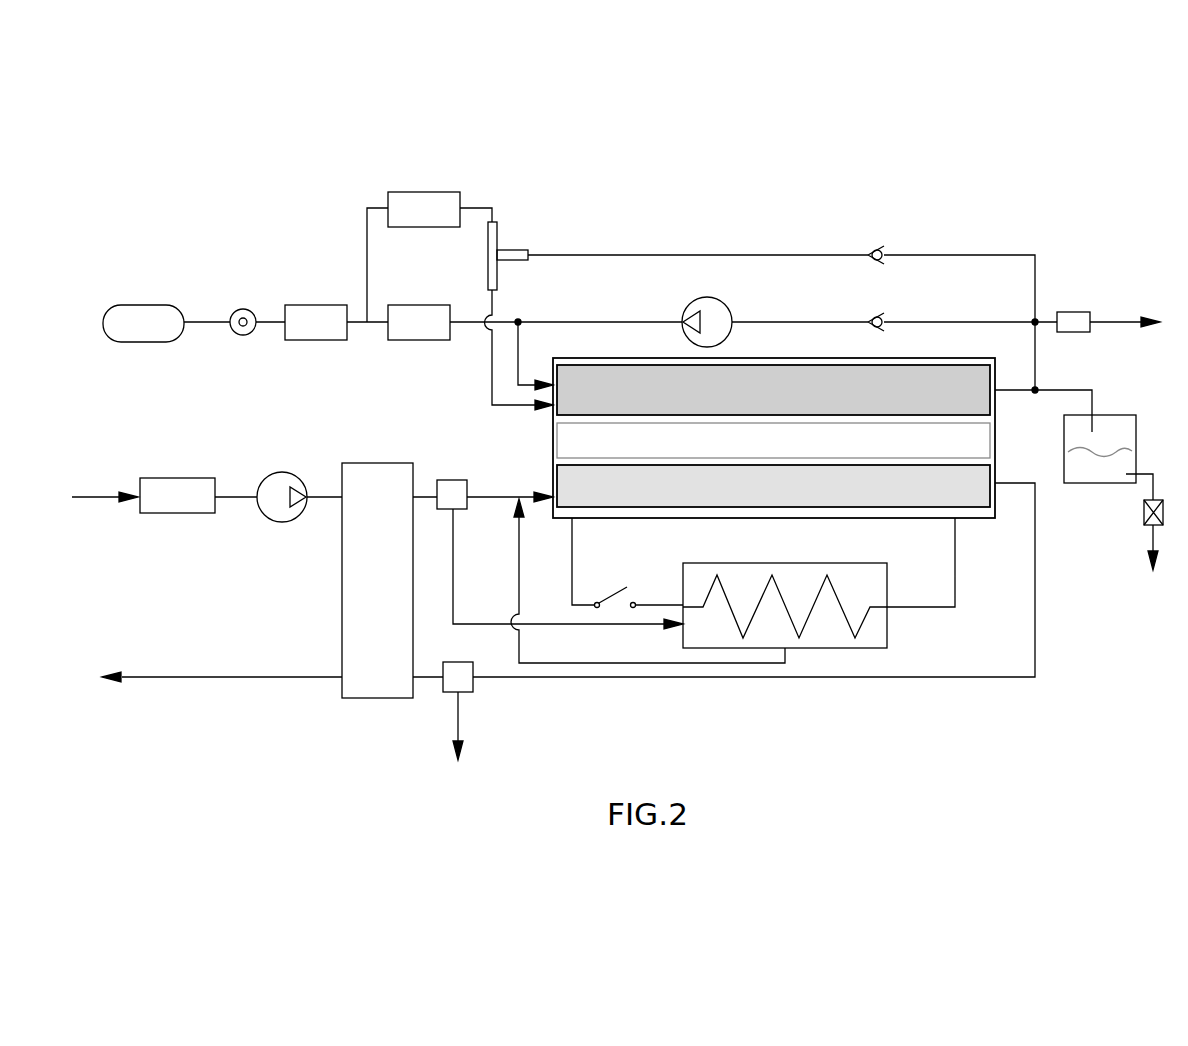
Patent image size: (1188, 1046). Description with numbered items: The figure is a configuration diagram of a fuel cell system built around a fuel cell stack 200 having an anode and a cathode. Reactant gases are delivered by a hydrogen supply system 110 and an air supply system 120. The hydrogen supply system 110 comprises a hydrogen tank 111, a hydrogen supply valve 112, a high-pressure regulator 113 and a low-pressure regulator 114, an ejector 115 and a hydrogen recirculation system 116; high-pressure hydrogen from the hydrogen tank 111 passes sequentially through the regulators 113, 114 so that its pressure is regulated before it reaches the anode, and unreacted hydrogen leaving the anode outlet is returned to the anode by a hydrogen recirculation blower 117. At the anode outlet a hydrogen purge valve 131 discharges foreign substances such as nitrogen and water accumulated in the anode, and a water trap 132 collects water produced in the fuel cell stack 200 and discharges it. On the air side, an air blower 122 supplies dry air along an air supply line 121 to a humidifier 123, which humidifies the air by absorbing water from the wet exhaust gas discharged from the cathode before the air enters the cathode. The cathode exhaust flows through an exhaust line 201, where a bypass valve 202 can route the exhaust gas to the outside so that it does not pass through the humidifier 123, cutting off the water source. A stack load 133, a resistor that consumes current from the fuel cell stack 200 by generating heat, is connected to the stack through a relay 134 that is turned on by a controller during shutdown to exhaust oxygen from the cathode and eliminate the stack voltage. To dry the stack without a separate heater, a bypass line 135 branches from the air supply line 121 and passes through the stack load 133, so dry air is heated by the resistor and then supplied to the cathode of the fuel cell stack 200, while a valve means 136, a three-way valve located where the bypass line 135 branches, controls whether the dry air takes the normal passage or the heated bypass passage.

The hydrogen supply system 110 is at (348, 284).
The hydrogen tank 111 is at (140, 306).
The hydrogen supply valve 112 is at (243, 338).
The high-pressure regulator 113 is at (312, 341).
The low-pressure regulator 114 is at (415, 341).
The ejector 115 is at (500, 235).
The hydrogen recirculation system 116 is at (751, 318).
The hydrogen recirculation blower 117 is at (707, 297).
The air supply system 120 is at (232, 549).
The air supply line 121 is at (330, 498).
The air blower 122 is at (282, 522).
The humidifier 123 is at (348, 641).
The hydrogen purge valve 131 is at (1073, 312).
The water trap 132 is at (1105, 415).
The stack load 133 is at (792, 623).
The relay 134 is at (607, 604).
The bypass line 135 is at (492, 622).
The valve means 136 is at (457, 480).
The fuel cell stack 200 is at (905, 356).
The exhaust line 201 is at (973, 678).
The bypass valve 202 is at (443, 692).